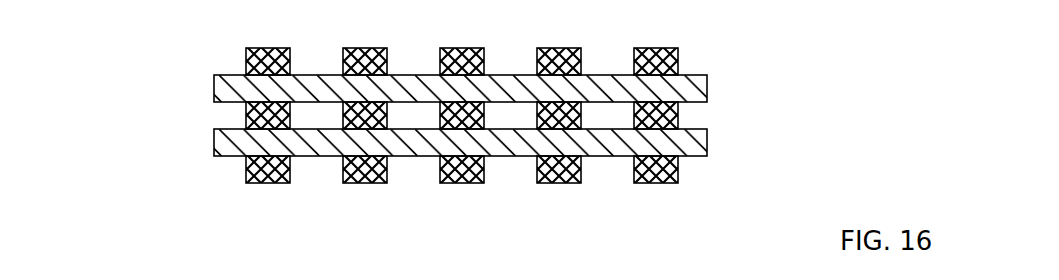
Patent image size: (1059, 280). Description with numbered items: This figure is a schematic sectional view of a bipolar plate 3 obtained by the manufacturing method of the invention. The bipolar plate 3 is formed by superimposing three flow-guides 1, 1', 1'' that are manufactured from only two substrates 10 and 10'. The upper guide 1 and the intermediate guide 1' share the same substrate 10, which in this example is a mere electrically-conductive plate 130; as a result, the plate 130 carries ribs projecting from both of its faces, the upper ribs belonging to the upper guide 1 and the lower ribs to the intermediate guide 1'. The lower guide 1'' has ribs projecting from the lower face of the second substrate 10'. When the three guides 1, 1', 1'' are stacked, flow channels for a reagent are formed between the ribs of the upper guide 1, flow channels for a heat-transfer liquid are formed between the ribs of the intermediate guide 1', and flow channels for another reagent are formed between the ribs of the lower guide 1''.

The bipolar plate 3 is at (739, 29).
The upper flow-guide 1 is at (428, 49).
The intermediate flow-guide 1' is at (425, 122).
The lower flow-guide 1'' is at (425, 183).
The substrate 10 is at (428, 89).
The electrically-conductive plate 130 is at (218, 82).
The substrate 10' is at (493, 141).